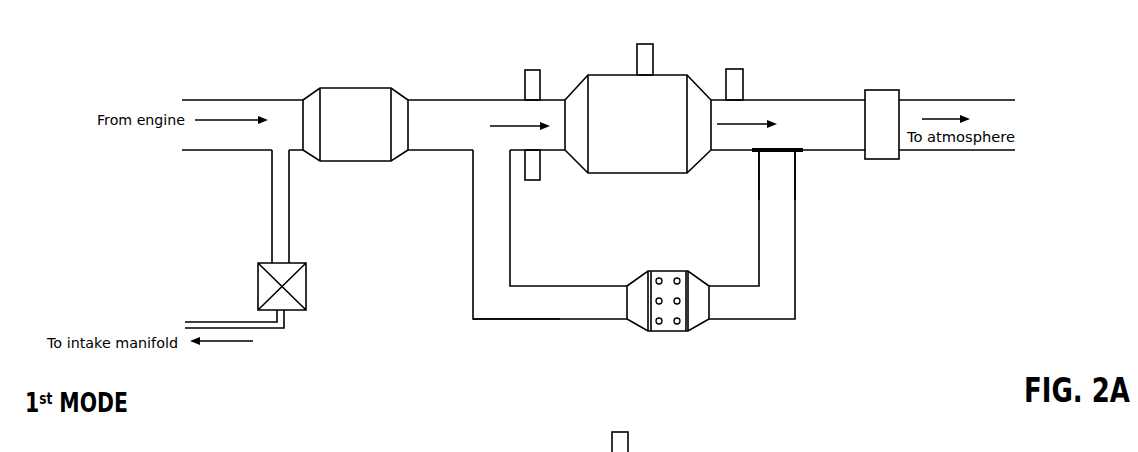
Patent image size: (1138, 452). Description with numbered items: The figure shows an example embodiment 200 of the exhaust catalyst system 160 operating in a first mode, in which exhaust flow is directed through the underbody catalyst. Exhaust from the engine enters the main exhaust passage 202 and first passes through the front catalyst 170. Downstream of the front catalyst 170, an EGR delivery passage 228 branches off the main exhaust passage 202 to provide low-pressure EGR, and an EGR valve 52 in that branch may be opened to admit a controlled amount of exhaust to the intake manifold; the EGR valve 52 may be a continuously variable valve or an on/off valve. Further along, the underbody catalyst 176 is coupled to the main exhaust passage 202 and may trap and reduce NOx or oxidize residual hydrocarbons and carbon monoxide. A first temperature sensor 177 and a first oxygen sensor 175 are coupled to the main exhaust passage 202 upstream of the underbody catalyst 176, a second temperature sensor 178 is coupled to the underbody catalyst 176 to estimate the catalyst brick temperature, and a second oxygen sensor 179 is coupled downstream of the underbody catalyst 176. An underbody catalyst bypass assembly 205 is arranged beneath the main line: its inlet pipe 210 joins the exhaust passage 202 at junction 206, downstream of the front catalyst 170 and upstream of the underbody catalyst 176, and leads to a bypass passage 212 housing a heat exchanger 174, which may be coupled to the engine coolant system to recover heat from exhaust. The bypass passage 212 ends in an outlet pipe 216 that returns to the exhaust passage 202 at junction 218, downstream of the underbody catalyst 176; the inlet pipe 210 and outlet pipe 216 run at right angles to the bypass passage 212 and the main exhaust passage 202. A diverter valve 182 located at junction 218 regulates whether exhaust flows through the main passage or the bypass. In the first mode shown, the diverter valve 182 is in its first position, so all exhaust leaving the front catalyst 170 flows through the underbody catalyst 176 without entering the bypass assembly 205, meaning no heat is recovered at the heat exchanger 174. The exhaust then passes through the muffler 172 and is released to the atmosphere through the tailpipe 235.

In FIG. 2A, the EGR valve 52 is at (306, 262).
In FIG. 2A, the exhaust catalyst system 160 is at (785, 71).
In FIG. 2B, the exhaust catalyst system 160 is at (870, 439).
In FIG. 2A, the front catalyst 170 is at (378, 163).
In FIG. 2A, the muffler 172 is at (885, 160).
In FIG. 2A, the heat exchanger 174 is at (681, 332).
In FIG. 2A, the first oxygen sensor 175 is at (527, 182).
In FIG. 2A, the underbody catalyst 176 is at (641, 175).
In FIG. 2A, the first temperature sensor 177 is at (530, 69).
In FIG. 2B, the first temperature sensor 177 is at (510, 451).
In FIG. 2A, the second temperature sensor 178 is at (636, 66).
In FIG. 2B, the second temperature sensor 178 is at (612, 451).
In FIG. 2A, the second oxygen sensor 179 is at (737, 68).
In FIG. 2B, the second oxygen sensor 179 is at (735, 451).
In FIG. 2A, the diverter valve 182 is at (795, 150).
In FIG. 2B, the diverter valve 182 is at (822, 449).
In FIG. 2A, the exhaust catalyst system assembly 200 is at (1037, 63).
In FIG. 2A, the main exhaust passage 202 is at (190, 152).
In FIG. 2A, the underbody catalyst bypass assembly 205 is at (838, 300).
In FIG. 2A, the junction 206 is at (470, 152).
In FIG. 2A, the inlet pipe 210 is at (472, 271).
In FIG. 2A, the bypass passage 212 is at (503, 321).
In FIG. 2A, the outlet pipe 216 is at (797, 258).
In FIG. 2A, the junction 218 is at (797, 152).
In FIG. 2A, the EGR delivery passage 228 is at (270, 330).
In FIG. 2A, the tailpipe 235 is at (993, 152).